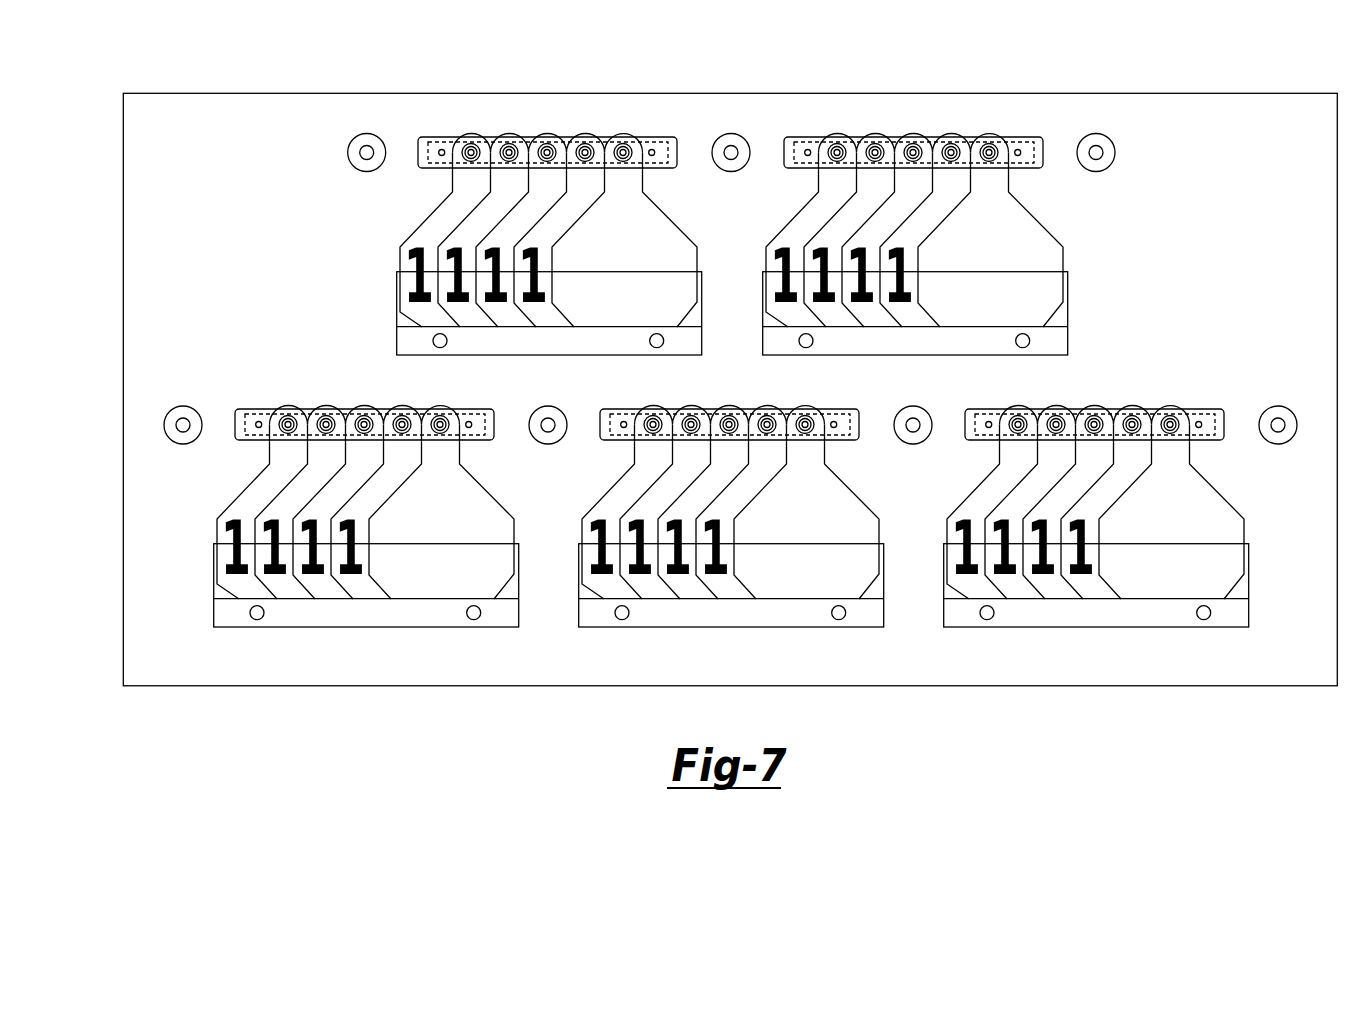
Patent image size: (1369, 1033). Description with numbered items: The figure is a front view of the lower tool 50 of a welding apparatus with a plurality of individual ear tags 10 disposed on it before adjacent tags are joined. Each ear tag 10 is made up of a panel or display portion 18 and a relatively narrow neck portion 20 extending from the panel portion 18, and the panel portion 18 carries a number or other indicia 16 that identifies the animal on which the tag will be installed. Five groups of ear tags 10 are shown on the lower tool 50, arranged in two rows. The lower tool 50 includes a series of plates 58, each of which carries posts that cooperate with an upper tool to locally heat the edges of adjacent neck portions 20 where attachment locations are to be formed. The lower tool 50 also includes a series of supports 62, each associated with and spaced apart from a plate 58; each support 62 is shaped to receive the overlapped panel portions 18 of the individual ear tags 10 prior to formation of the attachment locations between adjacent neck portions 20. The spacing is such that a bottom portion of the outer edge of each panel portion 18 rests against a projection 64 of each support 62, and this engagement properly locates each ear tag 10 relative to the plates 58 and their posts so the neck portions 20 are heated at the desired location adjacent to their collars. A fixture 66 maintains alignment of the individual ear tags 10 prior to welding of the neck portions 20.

The ear tag 10 is at (733, 360).
The indicia 16 is at (683, 263).
The panel portion 18 is at (654, 241).
The neck portion 20 is at (628, 185).
The lower tool 50 is at (1287, 90).
The plate 58 is at (447, 150).
The support 62 is at (397, 293).
The projection 64 is at (412, 342).
The fixture 66 is at (528, 128).